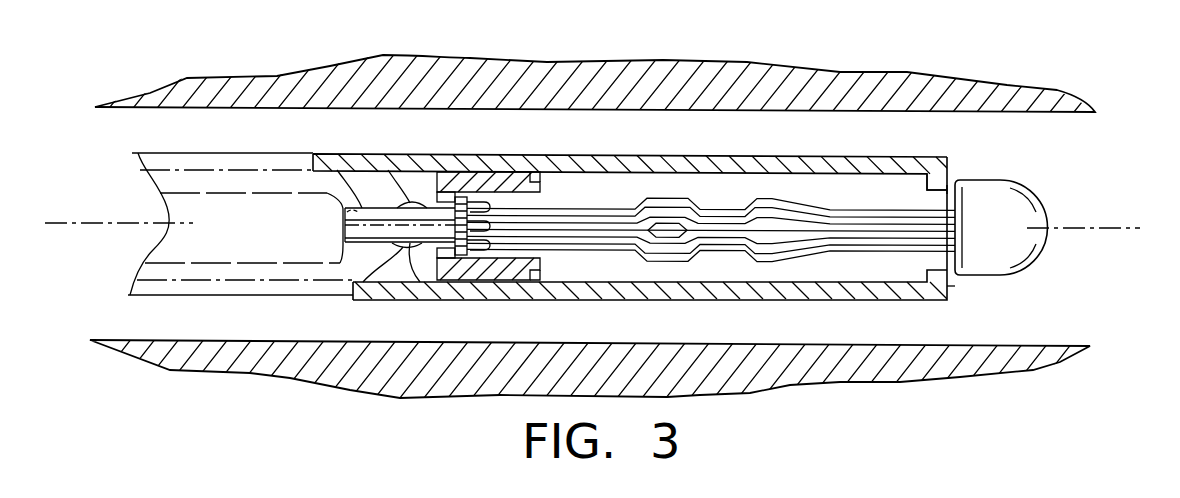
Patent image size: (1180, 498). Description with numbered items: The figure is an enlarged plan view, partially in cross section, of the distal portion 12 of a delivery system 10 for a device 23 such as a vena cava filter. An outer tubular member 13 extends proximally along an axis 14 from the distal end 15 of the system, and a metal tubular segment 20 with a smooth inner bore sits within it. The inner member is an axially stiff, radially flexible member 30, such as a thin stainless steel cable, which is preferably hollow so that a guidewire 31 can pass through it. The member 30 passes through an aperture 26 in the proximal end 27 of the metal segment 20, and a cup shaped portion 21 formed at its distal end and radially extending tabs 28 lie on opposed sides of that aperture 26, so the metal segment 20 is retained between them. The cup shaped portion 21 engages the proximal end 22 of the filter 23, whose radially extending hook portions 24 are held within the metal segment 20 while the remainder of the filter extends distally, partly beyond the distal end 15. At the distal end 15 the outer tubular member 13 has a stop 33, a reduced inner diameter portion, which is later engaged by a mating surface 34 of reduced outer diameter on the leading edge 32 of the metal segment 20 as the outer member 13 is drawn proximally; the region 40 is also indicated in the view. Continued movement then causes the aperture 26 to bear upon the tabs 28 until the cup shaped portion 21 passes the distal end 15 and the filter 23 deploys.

The delivery system 10 is at (325, 56).
The distal portion 12 is at (845, 152).
The outer tubular member 13 is at (163, 153).
The axis 14 is at (1083, 228).
The distal end 15 is at (957, 286).
The metal tubular segment 20 is at (457, 262).
The cup shaped portion 21 is at (443, 262).
The proximal end 22 is at (472, 196).
The device 23 is at (620, 208).
The hook portions 24 is at (488, 188).
The aperture 26 is at (413, 283).
The proximal end 27 is at (392, 178).
The tabs 28 is at (405, 202).
The axially stiff, radially flexible member 30 is at (331, 168).
The guidewire 31 is at (343, 213).
The leading edge 32 is at (541, 183).
The stop 33 is at (940, 174).
The mating surface 34 is at (545, 280).
The space 40 is at (708, 146).